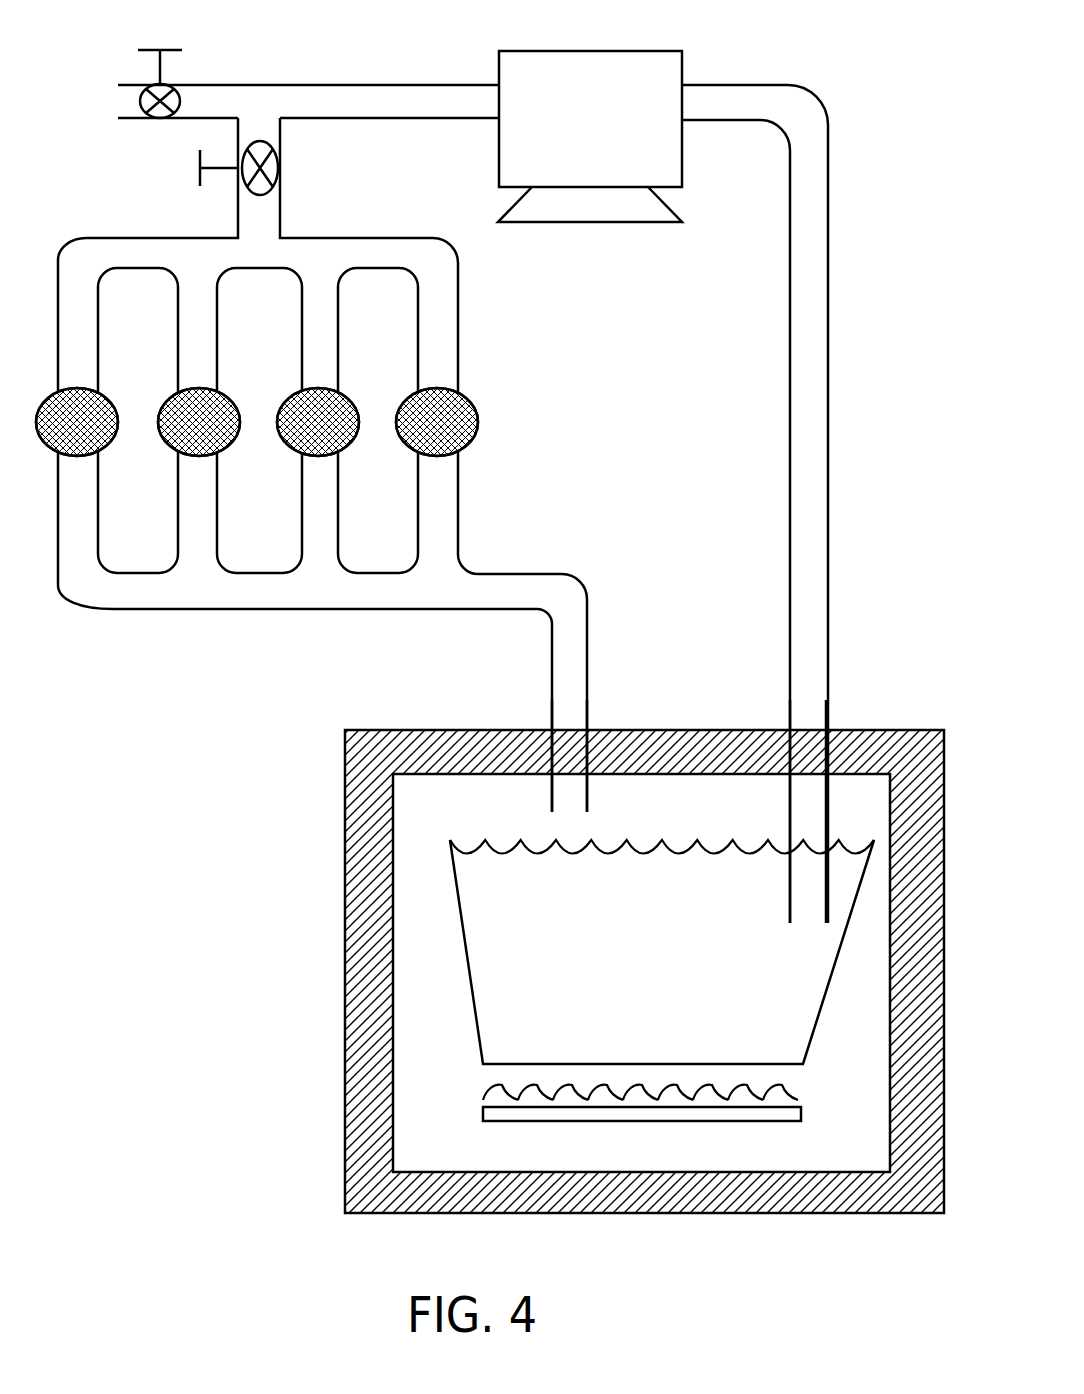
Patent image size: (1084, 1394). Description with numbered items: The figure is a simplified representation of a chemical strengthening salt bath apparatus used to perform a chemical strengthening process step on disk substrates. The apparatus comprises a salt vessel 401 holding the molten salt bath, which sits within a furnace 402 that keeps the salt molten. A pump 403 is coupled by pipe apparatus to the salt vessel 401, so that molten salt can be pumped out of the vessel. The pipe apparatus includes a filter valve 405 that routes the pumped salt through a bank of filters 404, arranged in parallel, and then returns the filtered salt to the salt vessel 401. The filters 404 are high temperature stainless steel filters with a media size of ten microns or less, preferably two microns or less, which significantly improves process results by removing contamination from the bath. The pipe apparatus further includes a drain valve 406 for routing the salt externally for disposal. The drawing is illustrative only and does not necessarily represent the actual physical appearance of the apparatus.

The salt vessel 401 is at (661, 1035).
The furnace 402 is at (343, 977).
The pump 403 is at (595, 51).
The bank of filters 404 is at (435, 390).
The filter valve 405 is at (280, 168).
The drain valve 406 is at (183, 83).